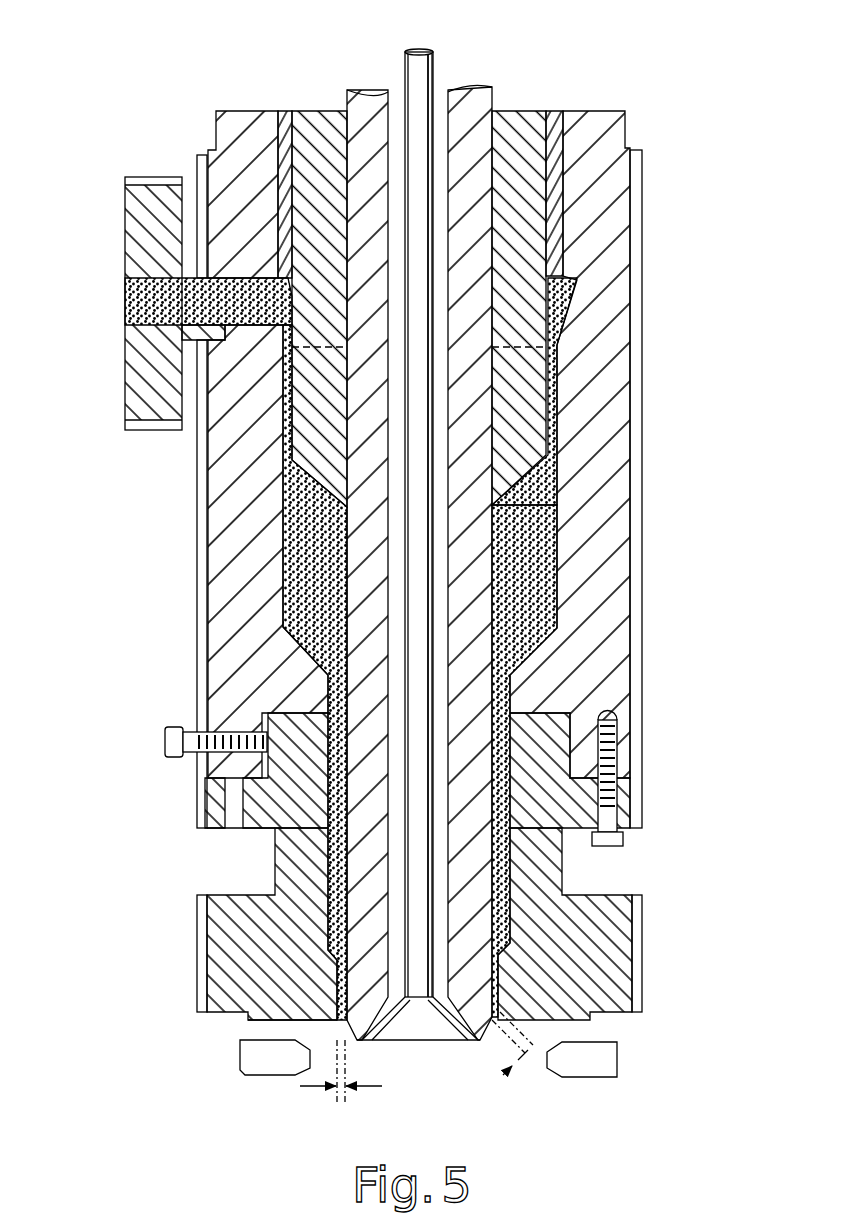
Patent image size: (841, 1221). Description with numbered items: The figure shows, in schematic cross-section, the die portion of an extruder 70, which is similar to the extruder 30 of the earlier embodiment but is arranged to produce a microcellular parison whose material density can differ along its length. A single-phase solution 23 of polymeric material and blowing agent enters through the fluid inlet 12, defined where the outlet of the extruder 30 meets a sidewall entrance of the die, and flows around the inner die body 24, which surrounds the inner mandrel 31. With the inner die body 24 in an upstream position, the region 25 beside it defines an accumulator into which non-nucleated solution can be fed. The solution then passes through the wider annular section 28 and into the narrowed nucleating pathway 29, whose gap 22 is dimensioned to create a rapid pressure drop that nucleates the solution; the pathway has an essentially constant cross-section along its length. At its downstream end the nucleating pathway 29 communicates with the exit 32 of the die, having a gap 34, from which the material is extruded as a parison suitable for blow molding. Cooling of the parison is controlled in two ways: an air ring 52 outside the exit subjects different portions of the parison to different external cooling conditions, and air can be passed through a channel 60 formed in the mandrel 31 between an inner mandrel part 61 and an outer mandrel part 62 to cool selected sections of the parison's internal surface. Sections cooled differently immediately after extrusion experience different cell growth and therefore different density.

The extruder 70 is at (243, 66).
The fluid inlet 12 is at (265, 262).
The extruder 30 is at (125, 240).
The single-phase solution 23 is at (125, 292).
The inner mandrel 31 is at (356, 535).
The inner die body 24 is at (522, 425).
The accumulator region 25 is at (540, 555).
The outer mandrel part 62 is at (484, 857).
The inner mandrel part 61 is at (438, 1054).
The channel 60 is at (442, 990).
The annular section 28 is at (324, 712).
The nucleating pathway 29 is at (322, 953).
The exit 32 is at (331, 1026).
The gap 34 is at (534, 1039).
The gap 22 is at (310, 1086).
The air ring 52 is at (246, 1077).